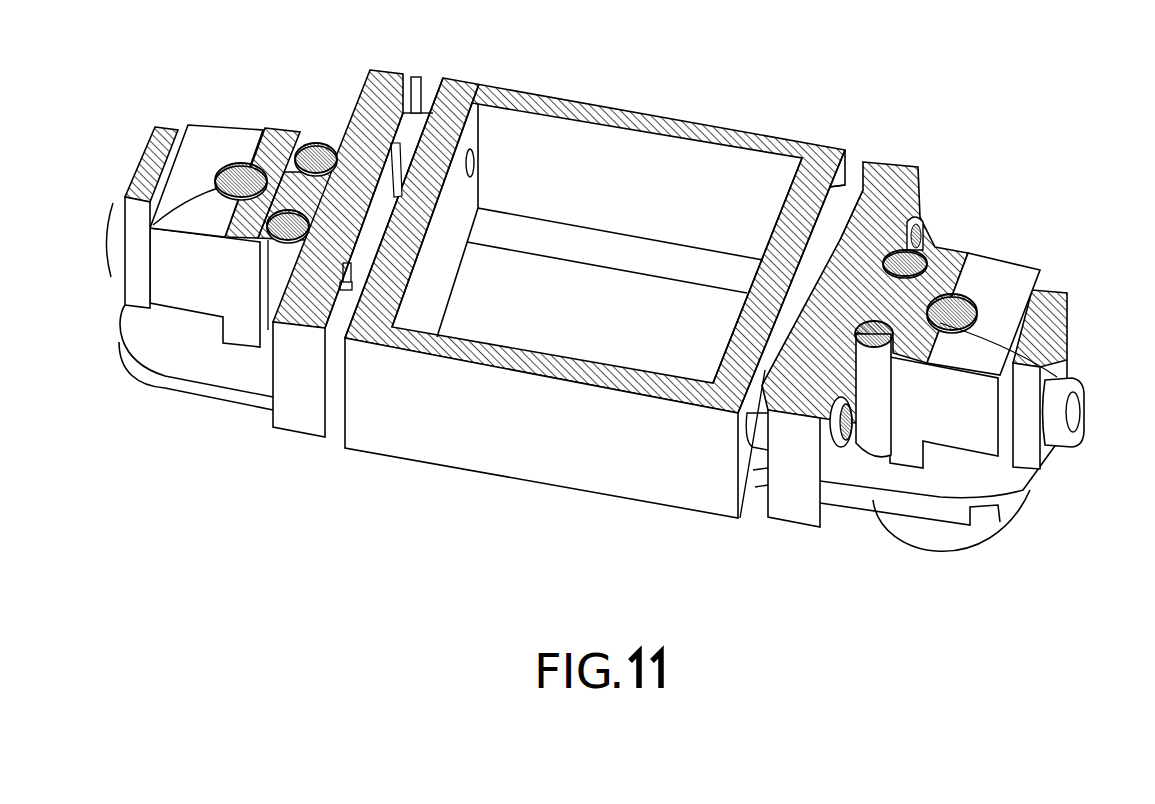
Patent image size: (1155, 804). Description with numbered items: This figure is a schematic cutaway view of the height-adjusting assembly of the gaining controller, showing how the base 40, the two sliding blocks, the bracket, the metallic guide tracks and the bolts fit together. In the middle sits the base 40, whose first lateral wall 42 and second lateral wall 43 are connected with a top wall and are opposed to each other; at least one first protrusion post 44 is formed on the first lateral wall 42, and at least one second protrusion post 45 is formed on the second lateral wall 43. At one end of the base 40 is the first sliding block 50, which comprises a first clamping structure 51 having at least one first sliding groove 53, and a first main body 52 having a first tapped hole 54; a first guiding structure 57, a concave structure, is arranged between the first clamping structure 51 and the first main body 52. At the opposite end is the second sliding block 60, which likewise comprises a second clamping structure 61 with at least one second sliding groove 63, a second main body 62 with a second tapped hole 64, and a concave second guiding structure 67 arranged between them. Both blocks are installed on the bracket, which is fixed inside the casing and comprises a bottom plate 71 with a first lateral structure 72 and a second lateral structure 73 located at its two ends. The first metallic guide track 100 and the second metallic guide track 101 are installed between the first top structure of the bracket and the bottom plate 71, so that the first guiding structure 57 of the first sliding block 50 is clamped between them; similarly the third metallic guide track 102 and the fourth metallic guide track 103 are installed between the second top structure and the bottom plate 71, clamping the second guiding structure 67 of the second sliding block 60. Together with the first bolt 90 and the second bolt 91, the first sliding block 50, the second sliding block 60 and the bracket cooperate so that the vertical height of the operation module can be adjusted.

The base 40 is at (535, 278).
The first lateral wall 42 is at (753, 327).
The second lateral wall 43 is at (428, 195).
The first protrusion post 44 is at (840, 208).
The second protrusion post 45 is at (425, 108).
The first sliding block 50 is at (800, 507).
The first clamping structure 51 is at (823, 273).
The first main body 52 is at (1000, 275).
The first sliding groove 53 is at (867, 163).
The first tapped hole 54 is at (1070, 425).
The first guiding structure 57 is at (837, 298).
The second sliding block 60 is at (305, 420).
The second clamping structure 61 is at (474, 163).
The second main body 62 is at (190, 180).
The second sliding groove 63 is at (415, 110).
The second tapped hole 64 is at (152, 227).
The second guiding structure 67 is at (352, 283).
The bottom plate 71 is at (873, 495).
The first lateral structure 72 is at (1057, 348).
The second lateral structure 73 is at (135, 230).
The first bolt 90 is at (963, 287).
The second bolt 91 is at (242, 167).
The first metallic guide track 100 is at (873, 410).
The second metallic guide track 101 is at (921, 250).
The third metallic guide track 102 is at (280, 262).
The fourth metallic guide track 103 is at (316, 152).